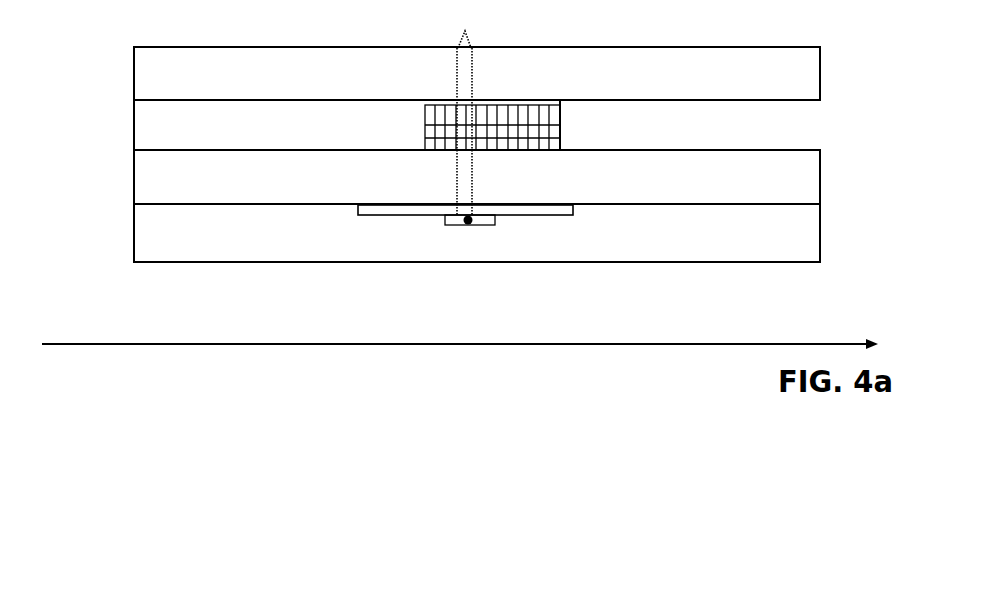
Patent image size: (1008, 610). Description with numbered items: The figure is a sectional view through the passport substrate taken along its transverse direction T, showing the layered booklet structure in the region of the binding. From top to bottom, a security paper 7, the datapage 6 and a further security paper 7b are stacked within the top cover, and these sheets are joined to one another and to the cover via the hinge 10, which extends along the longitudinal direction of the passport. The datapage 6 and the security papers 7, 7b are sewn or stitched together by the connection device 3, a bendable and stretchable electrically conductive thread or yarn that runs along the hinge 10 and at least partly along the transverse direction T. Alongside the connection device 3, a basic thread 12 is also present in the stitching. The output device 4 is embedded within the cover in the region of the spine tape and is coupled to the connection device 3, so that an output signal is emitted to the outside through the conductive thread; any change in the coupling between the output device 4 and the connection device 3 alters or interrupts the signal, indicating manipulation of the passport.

The security paper 7 is at (160, 78).
The datapage 6 is at (163, 127).
The hinge 10 is at (543, 135).
The security paper 7b is at (162, 176).
The connection device 3 is at (468, 223).
The output device 4 is at (483, 224).
The basic thread 12 is at (472, 73).
The transverse direction T is at (427, 344).